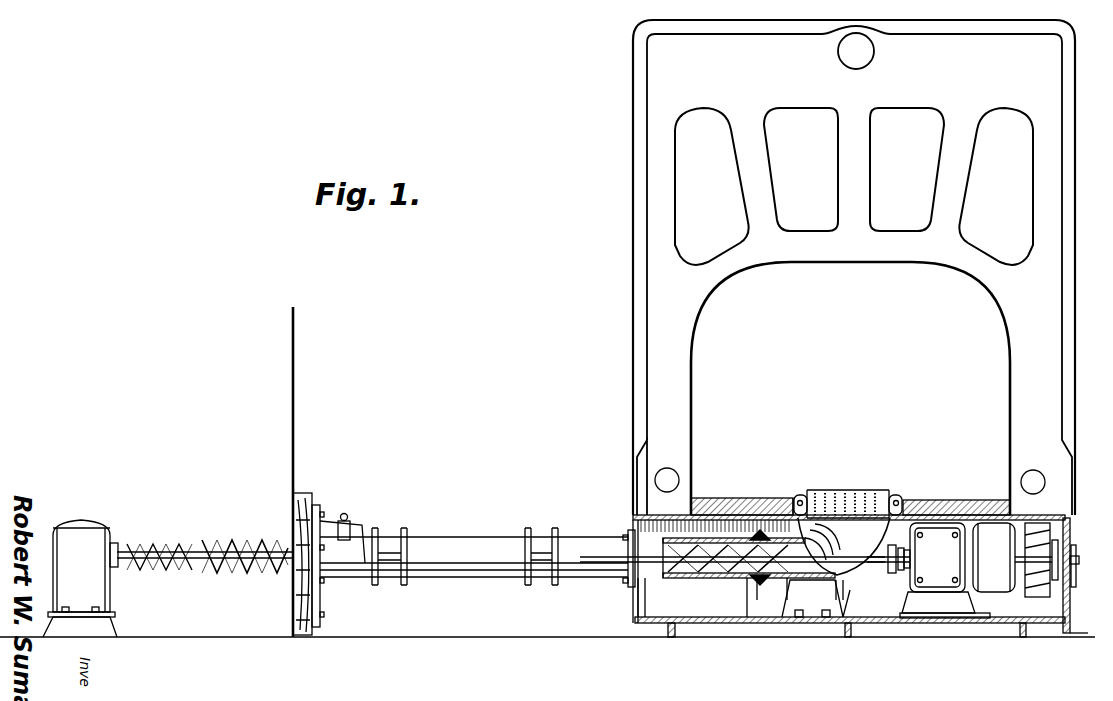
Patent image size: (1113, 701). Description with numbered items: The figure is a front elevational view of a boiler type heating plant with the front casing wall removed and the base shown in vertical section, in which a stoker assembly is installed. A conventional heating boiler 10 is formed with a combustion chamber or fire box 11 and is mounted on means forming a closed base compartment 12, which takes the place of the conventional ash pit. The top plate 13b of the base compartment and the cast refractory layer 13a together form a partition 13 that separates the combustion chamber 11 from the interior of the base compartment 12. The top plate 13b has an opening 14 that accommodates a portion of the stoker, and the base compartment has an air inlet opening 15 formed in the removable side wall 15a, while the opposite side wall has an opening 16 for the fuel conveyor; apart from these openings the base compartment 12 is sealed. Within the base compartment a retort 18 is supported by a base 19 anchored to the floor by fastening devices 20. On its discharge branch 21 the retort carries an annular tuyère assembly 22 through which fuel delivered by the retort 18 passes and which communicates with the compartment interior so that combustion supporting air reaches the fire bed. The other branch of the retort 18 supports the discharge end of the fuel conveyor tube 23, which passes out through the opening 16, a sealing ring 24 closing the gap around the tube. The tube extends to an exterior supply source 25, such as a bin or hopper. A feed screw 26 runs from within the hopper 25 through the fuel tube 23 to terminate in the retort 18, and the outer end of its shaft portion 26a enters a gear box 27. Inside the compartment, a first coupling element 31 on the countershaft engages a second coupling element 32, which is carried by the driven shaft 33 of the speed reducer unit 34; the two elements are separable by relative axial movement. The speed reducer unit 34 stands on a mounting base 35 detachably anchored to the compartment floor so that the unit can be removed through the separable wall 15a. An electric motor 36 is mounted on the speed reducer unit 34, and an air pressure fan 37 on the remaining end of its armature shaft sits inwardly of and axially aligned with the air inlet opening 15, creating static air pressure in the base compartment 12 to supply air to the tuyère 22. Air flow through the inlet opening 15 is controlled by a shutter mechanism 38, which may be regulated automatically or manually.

The heating boiler 10 is at (631, 315).
The combustion chamber 11 is at (708, 414).
The base compartment 12 is at (648, 526).
The partition 13 is at (724, 496).
The refractory layer 13a is at (955, 500).
The top plate 13b is at (750, 522).
The opening 14 is at (787, 503).
The air inlet opening 15 is at (1068, 537).
The removable side wall 15a is at (1073, 623).
The opening 16 is at (642, 587).
The retort 18 is at (858, 578).
The base 19 is at (787, 603).
The fastening devices 20 is at (838, 612).
The discharge branch 21 is at (878, 528).
The tuyère assembly 22 is at (856, 492).
The fuel conveyor tube 23 is at (708, 578).
The sealing ring 24 is at (633, 543).
The supply source 25 is at (296, 457).
The feed screw 26 is at (275, 542).
The shaft portion 26a is at (123, 550).
The gear box 27 is at (80, 518).
The coupling element 31 is at (892, 575).
The second coupling element 32 is at (896, 546).
The driven shaft 33 is at (905, 570).
The speed reducer unit 34 is at (944, 562).
The mounting base 35 is at (963, 607).
The electric motor 36 is at (999, 557).
The air pressure fan 37 is at (1042, 597).
The shutter mechanism 38 is at (1076, 575).